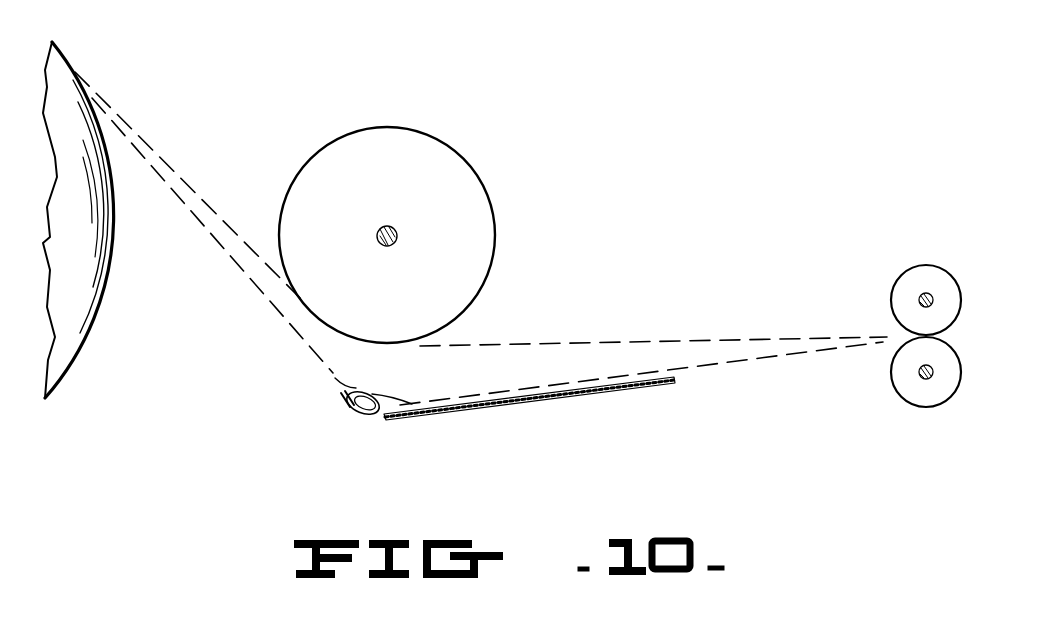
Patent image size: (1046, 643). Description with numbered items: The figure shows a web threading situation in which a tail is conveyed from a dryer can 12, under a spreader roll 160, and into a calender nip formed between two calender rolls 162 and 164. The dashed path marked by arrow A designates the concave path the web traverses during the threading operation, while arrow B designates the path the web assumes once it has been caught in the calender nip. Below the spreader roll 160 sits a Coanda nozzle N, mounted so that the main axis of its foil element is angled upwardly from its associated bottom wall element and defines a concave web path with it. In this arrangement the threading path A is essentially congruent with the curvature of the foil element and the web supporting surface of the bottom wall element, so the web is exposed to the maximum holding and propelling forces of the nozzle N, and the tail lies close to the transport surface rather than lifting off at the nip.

The dryer can 12 is at (77, 363).
The spreader roll 160 is at (472, 162).
The calender roll 162 is at (918, 265).
The calender roll 164 is at (915, 403).
The web threading path A is at (322, 364).
The web path after catching B is at (513, 343).
The Coanda nozzle N is at (380, 417).